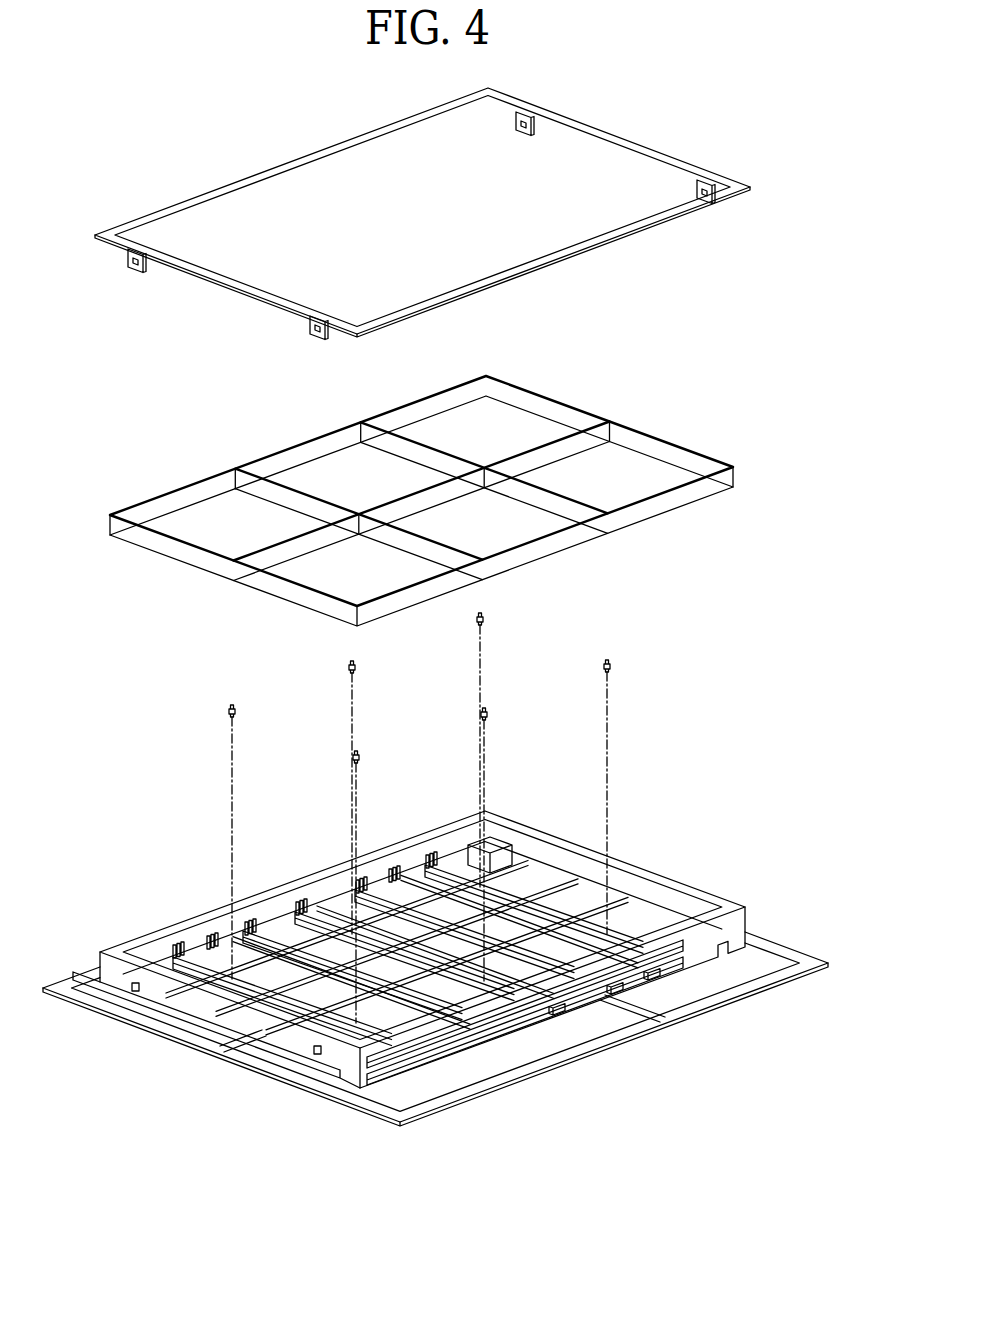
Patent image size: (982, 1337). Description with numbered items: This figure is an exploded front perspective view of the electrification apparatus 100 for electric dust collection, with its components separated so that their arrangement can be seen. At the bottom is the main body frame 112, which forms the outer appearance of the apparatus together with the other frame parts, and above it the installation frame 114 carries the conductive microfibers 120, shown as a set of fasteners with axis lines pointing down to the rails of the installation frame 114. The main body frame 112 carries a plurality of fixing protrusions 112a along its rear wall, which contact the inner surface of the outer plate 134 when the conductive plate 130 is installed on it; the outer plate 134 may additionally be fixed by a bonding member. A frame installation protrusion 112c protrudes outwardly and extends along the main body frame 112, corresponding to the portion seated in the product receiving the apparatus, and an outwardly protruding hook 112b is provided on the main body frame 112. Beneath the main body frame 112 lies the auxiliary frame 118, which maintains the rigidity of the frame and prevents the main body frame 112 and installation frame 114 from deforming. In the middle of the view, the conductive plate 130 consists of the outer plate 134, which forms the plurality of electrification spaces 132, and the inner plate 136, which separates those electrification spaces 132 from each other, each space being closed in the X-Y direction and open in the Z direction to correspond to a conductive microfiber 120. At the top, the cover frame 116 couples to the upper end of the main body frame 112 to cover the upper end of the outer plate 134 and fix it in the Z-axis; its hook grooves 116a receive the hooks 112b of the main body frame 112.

The electrification apparatus 100 is at (133, 106).
The main body frame 112 is at (660, 892).
The fixing protrusion 112a is at (205, 945).
The hook 112b is at (315, 1053).
The frame installation protrusion 112c is at (245, 1040).
The installation frame 114 is at (545, 903).
The cover frame 116 is at (302, 160).
The hook groove 116a is at (300, 337).
The auxiliary frame 118 is at (492, 1090).
The conductive microfiber 120 is at (230, 708).
The conductive plate 130 is at (136, 484).
The electrification space 132 is at (230, 527).
The outer plate 134 is at (187, 553).
The inner plate 136 is at (290, 496).